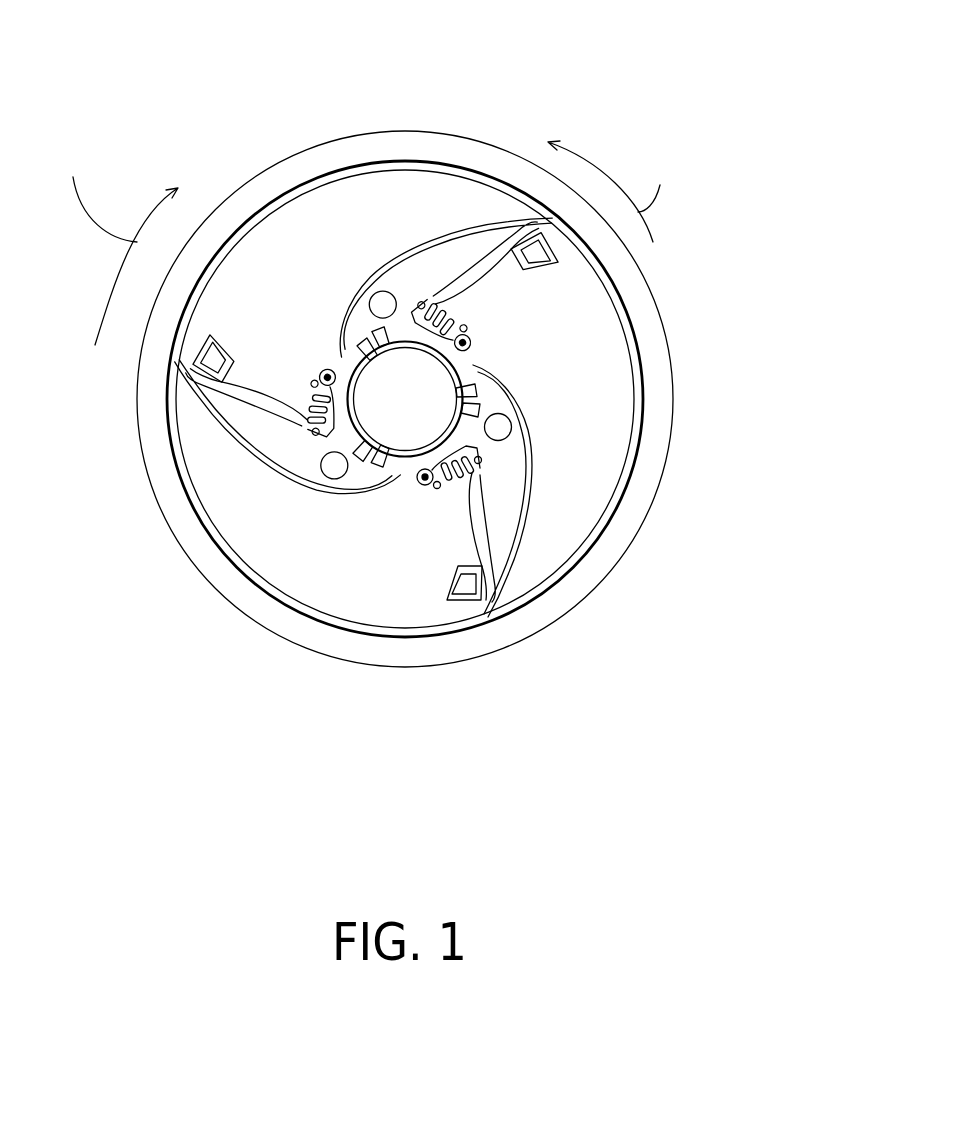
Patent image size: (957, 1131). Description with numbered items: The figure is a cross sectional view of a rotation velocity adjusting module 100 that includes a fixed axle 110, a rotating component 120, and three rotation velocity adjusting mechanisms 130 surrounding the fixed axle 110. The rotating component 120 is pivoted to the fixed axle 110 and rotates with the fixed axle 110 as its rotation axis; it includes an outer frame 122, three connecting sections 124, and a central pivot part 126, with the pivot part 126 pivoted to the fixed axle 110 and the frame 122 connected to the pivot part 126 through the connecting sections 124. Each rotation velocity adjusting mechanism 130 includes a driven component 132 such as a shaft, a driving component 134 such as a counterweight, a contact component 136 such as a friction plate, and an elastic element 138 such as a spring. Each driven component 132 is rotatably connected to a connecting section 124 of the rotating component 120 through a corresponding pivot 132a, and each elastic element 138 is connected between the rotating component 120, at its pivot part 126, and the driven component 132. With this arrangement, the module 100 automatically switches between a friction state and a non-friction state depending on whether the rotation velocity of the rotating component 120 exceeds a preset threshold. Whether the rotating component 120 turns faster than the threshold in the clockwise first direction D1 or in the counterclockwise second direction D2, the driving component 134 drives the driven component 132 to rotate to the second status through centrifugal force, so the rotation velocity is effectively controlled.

The rotation velocity adjusting module 100 is at (776, 853).
The fixed axle 110 is at (415, 433).
The rotating component 120 is at (692, 333).
The frame 122 is at (664, 398).
The connecting section 124 is at (334, 375).
The pivot part 126 is at (250, 378).
The rotation velocity adjusting mechanism 130 is at (628, 42).
The driven component 132 is at (461, 262).
The pivot 132a is at (382, 304).
The driving component 134 is at (535, 256).
The contact component 136 is at (352, 262).
The elastic element 138 is at (433, 300).
The first direction D1 is at (119, 241).
The second direction D2 is at (613, 191).